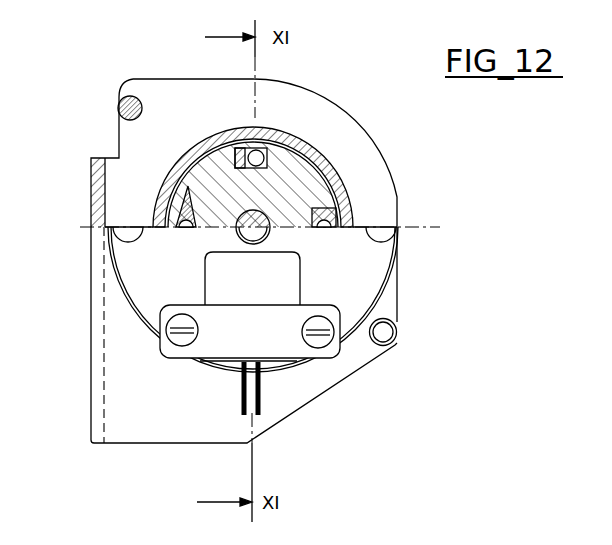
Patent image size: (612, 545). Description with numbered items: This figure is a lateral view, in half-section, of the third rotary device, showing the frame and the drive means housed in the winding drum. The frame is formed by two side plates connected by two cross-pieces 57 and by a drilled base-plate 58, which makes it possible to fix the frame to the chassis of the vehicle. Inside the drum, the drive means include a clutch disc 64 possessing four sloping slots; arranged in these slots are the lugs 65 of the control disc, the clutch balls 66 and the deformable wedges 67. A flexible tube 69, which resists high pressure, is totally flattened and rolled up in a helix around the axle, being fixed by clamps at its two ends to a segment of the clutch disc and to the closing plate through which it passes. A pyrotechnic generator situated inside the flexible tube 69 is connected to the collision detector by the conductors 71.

The cross-pieces 57 is at (125, 99).
The drilled base-plate 58 is at (96, 290).
The clutch disc 64 is at (303, 202).
The lugs 65 is at (340, 209).
The clutch balls 66 is at (271, 131).
The deformable wedges 67 is at (165, 204).
The flexible tube 69 is at (227, 282).
The conductors 71 is at (263, 399).